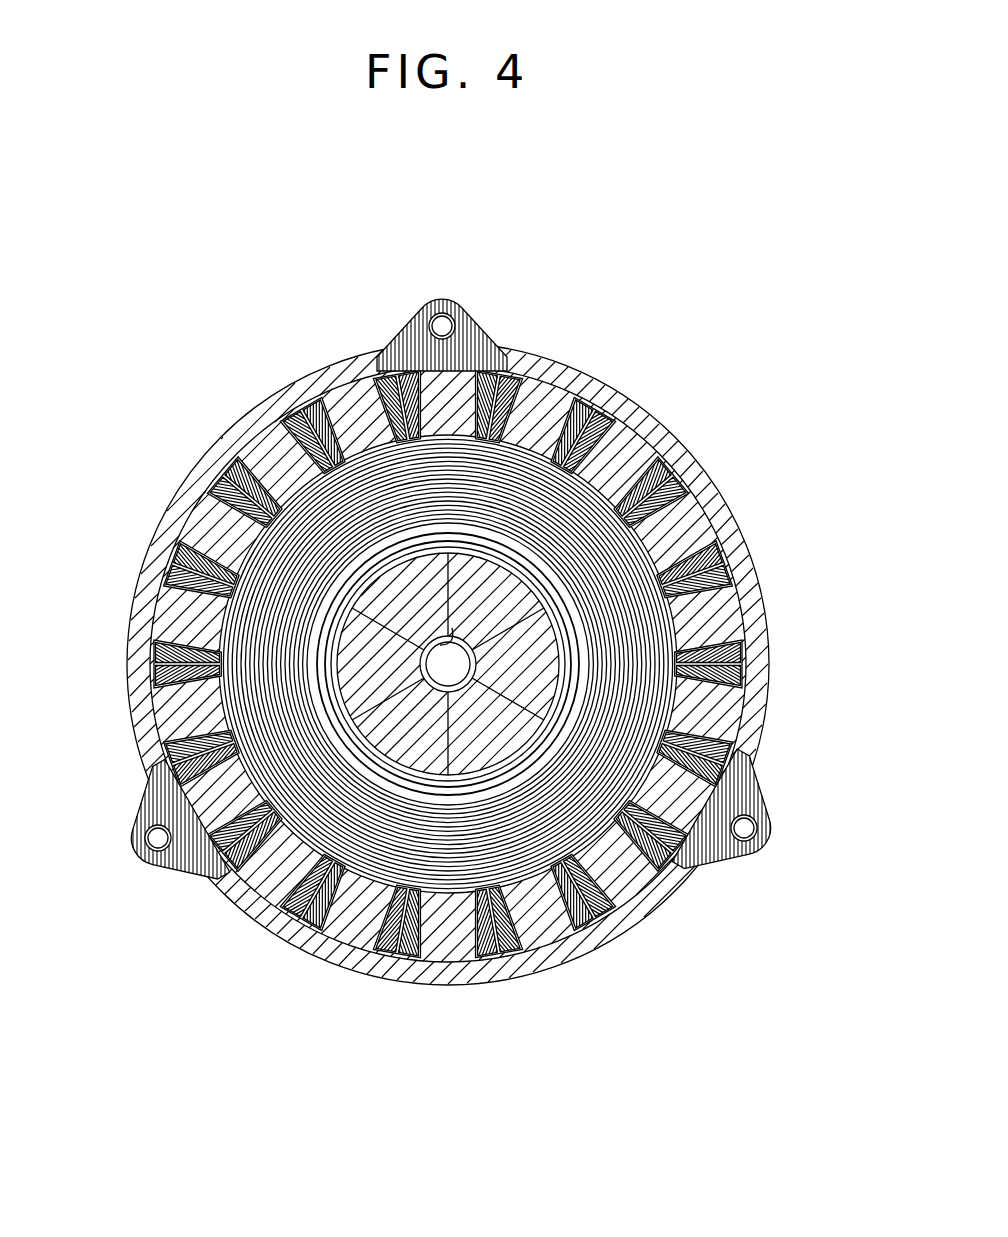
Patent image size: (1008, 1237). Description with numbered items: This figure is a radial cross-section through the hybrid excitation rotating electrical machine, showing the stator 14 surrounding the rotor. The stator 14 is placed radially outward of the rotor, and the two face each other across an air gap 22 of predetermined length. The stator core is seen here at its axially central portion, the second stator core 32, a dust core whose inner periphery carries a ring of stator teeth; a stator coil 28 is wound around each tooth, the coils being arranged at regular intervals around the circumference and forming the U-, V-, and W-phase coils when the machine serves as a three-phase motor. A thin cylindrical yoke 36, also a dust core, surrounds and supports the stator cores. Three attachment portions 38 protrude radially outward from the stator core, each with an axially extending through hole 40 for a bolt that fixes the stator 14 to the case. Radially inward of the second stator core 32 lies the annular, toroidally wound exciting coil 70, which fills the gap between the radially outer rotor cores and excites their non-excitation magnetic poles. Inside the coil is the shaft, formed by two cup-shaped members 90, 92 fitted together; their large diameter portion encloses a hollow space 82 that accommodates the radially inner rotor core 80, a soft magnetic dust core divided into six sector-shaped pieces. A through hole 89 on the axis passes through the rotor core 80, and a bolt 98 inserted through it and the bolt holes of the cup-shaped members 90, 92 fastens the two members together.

The stator 14 is at (525, 337).
The air gap 22 is at (170, 643).
The stator coil 28 is at (378, 940).
The second stator core 32 is at (690, 522).
The yoke 36 is at (612, 392).
The attachment portion 38 is at (135, 813).
The through hole 40 is at (157, 842).
The exciting coil 70 is at (657, 700).
The radially inner rotor core 80 is at (475, 583).
The hollow space 82 is at (466, 682).
The through hole 89 is at (452, 628).
The cup-shaped member 90 is at (560, 668).
The cup-shaped member 92 is at (563, 620).
The bolt 98 is at (450, 670).